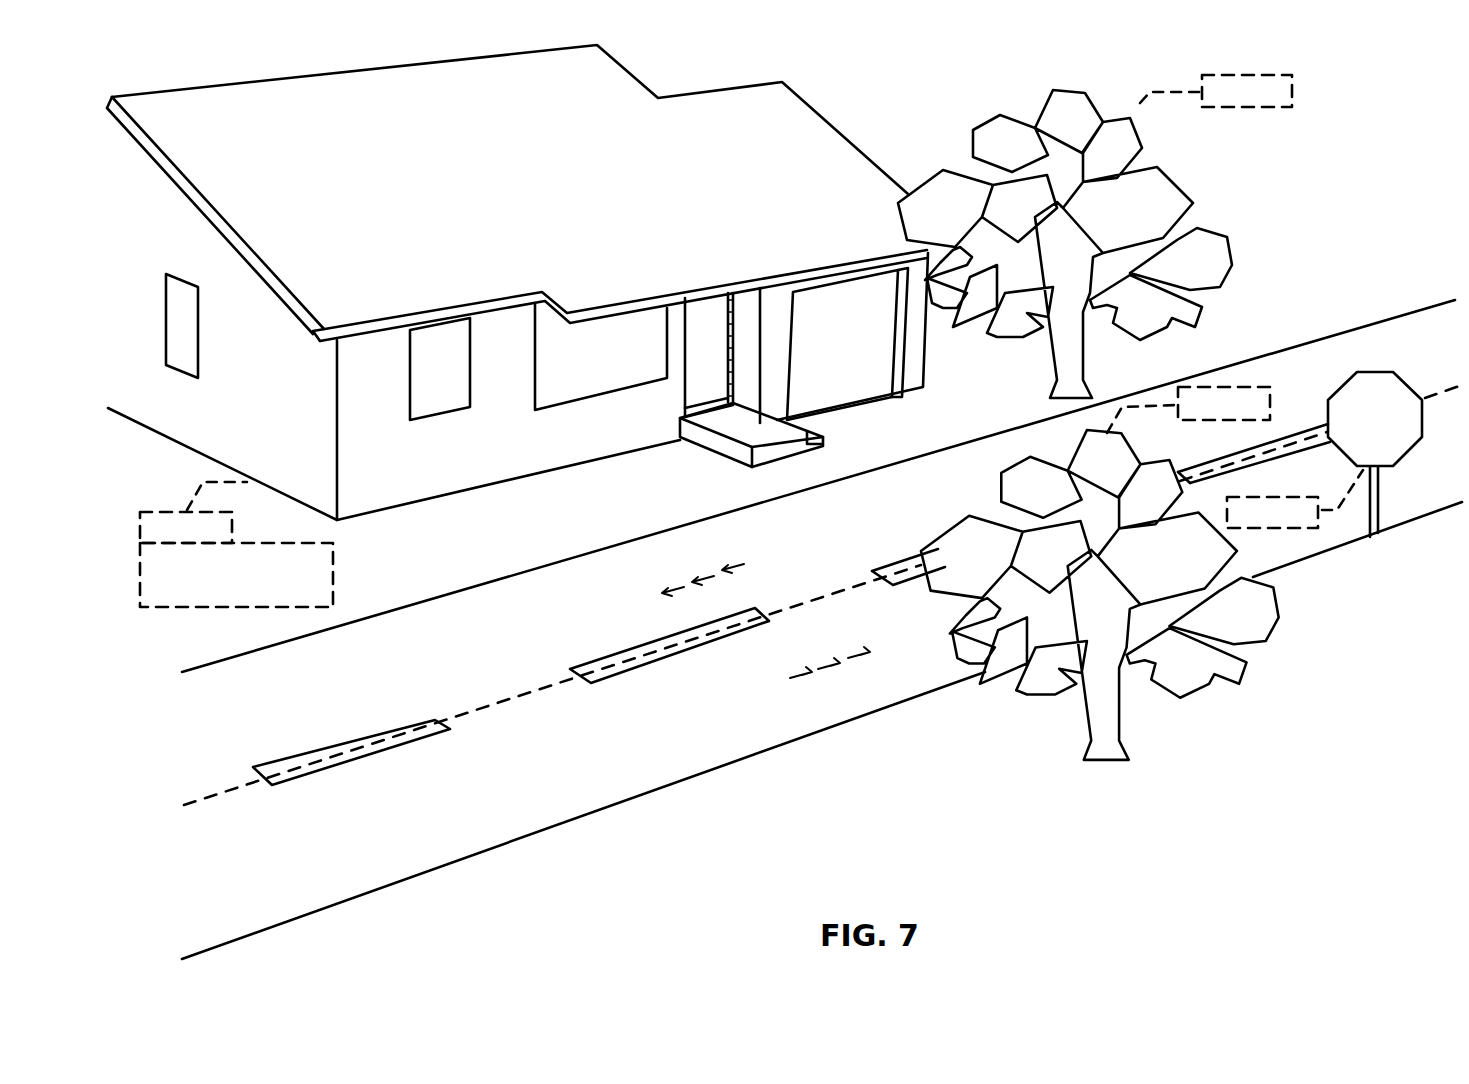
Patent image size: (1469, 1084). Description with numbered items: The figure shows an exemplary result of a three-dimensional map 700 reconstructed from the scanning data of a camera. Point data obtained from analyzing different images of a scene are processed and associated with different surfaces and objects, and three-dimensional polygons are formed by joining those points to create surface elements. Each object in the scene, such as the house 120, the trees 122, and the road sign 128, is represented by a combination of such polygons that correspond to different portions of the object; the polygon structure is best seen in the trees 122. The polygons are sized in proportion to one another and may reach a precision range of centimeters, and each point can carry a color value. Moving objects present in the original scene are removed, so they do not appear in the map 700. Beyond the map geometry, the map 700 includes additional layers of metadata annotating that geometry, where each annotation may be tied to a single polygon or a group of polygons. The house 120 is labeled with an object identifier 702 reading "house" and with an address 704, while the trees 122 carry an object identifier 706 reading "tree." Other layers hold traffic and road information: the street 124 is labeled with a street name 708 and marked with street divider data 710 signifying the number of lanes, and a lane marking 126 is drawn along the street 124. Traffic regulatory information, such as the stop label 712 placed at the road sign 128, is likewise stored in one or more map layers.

The house 120 is at (557, 215).
The trees 122 is at (1236, 282).
The street 124 is at (821, 566).
The lane marker 126 is at (695, 648).
The road sign 128 is at (1338, 389).
The 3D map 700 is at (784, 502).
The object identifier 702 is at (232, 517).
The address 704 is at (334, 563).
The object identifier 706 is at (1292, 92).
The street name 708 is at (539, 631).
The street divider data 710 is at (469, 722).
The label 712 is at (1290, 528).